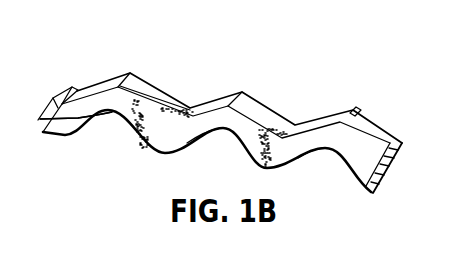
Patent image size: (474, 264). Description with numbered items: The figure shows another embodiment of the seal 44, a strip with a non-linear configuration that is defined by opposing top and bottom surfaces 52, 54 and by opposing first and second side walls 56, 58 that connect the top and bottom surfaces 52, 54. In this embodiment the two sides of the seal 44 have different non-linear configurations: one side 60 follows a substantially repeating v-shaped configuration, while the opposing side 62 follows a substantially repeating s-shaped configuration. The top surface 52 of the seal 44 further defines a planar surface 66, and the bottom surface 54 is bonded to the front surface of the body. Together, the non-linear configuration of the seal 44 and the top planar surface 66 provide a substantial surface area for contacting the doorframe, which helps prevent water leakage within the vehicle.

The seal 44 is at (77, 88).
The top surface 52 is at (355, 150).
The bottom surface 54 is at (364, 111).
The first side wall 56 is at (153, 92).
The second side wall 58 is at (112, 116).
The one side 60 is at (212, 75).
The opposing side 62 is at (146, 162).
The planar surface 66 is at (181, 128).